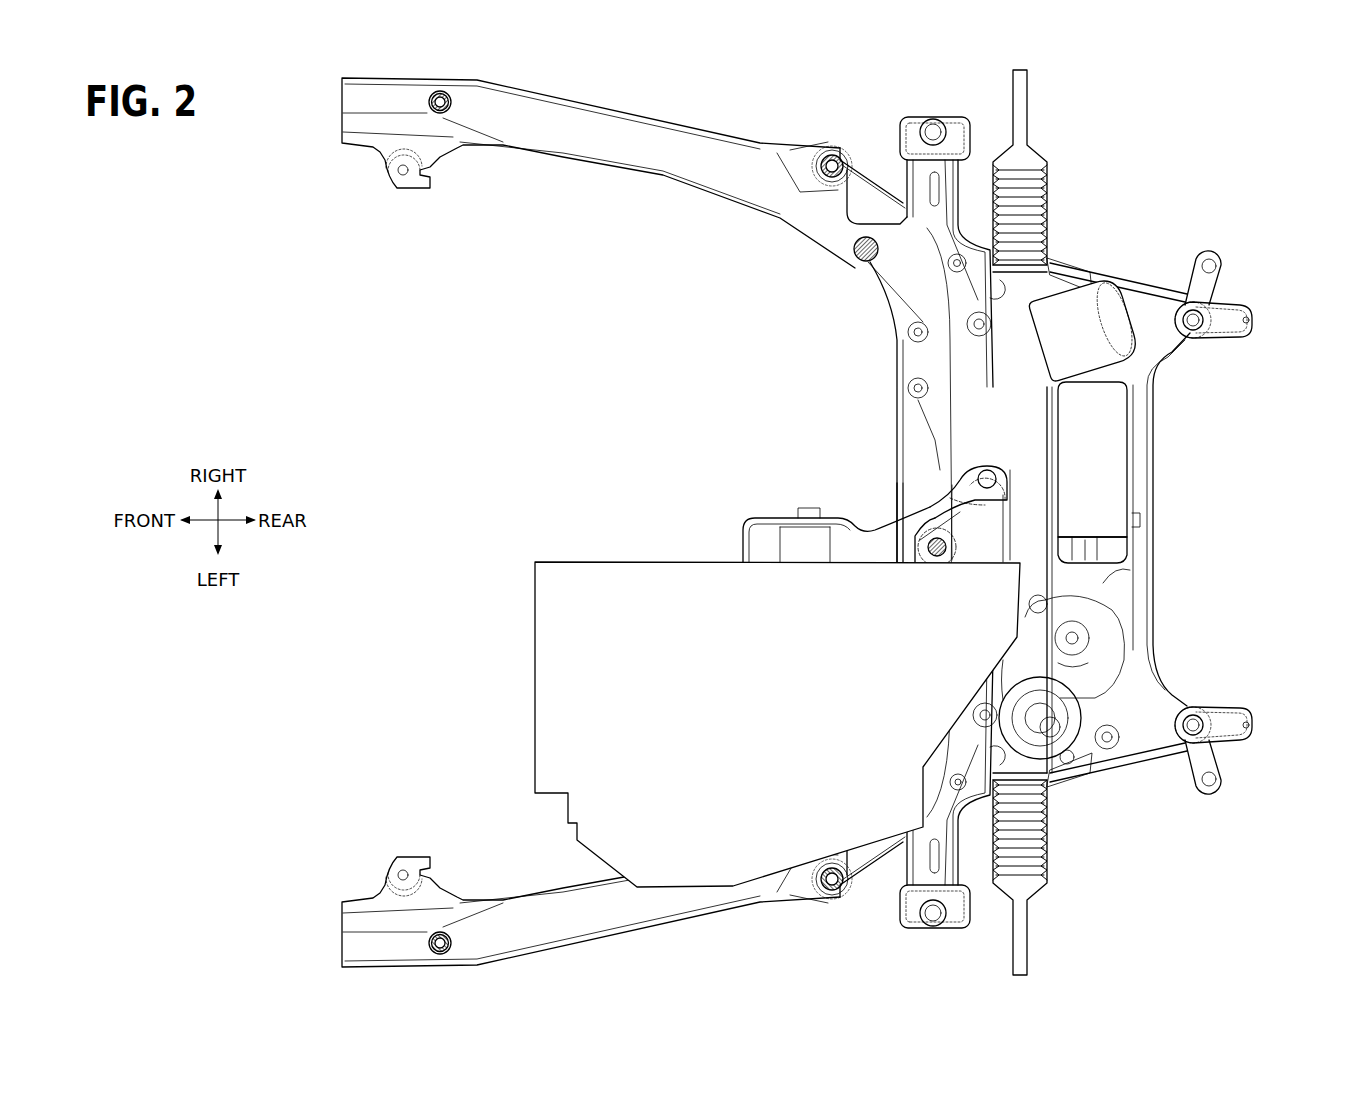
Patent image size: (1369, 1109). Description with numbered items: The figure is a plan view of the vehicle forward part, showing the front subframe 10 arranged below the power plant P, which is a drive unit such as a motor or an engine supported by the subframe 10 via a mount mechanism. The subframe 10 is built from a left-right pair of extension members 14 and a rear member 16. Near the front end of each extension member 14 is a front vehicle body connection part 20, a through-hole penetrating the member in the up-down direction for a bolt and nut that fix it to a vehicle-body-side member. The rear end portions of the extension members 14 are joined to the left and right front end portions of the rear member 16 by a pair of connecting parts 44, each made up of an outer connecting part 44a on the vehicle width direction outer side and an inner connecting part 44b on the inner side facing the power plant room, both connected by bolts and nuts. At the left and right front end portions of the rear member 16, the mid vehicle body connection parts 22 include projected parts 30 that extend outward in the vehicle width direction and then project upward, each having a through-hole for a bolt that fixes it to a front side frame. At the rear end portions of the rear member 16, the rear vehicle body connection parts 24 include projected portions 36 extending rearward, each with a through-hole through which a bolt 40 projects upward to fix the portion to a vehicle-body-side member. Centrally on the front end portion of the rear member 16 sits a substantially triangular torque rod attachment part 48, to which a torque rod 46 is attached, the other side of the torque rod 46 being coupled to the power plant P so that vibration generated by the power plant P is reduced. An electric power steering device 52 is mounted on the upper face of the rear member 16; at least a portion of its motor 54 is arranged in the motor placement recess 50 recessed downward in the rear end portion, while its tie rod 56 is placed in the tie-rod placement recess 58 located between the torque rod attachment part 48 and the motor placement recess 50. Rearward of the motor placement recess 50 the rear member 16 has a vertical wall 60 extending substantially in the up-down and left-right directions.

The front subframe 10 is at (1180, 170).
The extension members 14 is at (683, 122).
The rear member 16 is at (1165, 513).
The front vehicle body connection parts 20 is at (443, 113).
The mid vehicle body connection parts 22 is at (936, 122).
The rear vehicle body connection parts 24 is at (1197, 334).
The projected parts 30 is at (903, 132).
The projected portions 36 is at (1256, 322).
The bolt 40 is at (1224, 300).
The connecting parts 44 is at (820, 208).
The outer connecting part 44a is at (832, 156).
The inner connecting part 44b is at (866, 262).
The torque rod 46 is at (873, 520).
The torque rod attachment part 48 is at (950, 488).
The motor placement recess 50 is at (1110, 575).
The electric power steering device 52 is at (1062, 265).
The motor 54 is at (1113, 433).
The tie rod 56 is at (1035, 490).
The tie-rod placement recess 58 is at (1095, 618).
The vertical wall 60 is at (1167, 555).
The power plant P is at (598, 550).